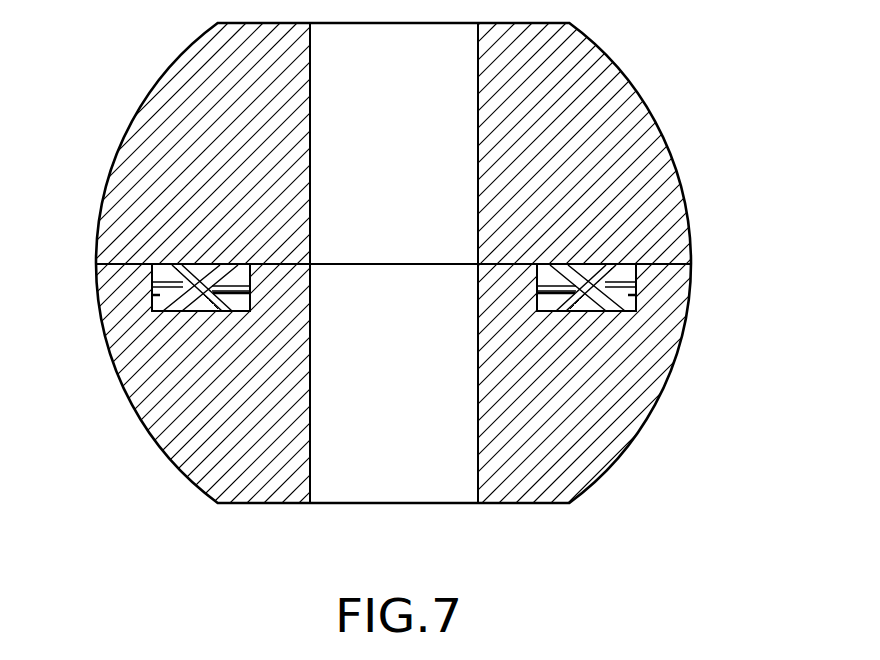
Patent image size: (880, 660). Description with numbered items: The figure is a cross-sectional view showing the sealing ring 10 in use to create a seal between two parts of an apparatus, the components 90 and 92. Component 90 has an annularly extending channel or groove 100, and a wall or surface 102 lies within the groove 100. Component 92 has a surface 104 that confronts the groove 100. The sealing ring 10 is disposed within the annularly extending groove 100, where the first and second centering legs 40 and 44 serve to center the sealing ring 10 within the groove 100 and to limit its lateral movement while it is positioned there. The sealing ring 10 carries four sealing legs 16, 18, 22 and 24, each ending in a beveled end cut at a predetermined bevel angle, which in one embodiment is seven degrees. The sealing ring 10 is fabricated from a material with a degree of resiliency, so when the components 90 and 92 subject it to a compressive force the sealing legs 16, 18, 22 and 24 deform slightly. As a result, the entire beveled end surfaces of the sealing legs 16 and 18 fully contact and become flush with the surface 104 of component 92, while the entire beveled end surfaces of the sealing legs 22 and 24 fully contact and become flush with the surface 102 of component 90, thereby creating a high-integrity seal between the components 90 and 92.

The sealing ring 10 is at (182, 312).
The sealing leg 16 is at (177, 264).
The sealing leg 18 is at (217, 265).
The sealing leg 22 is at (180, 303).
The sealing leg 24 is at (221, 311).
The first centering leg 40 is at (153, 285).
The second centering leg 44 is at (248, 285).
The component 90 is at (102, 325).
The component 92 is at (122, 141).
The groove 100 is at (155, 298).
The surface 102 is at (636, 308).
The surface 104 is at (668, 265).